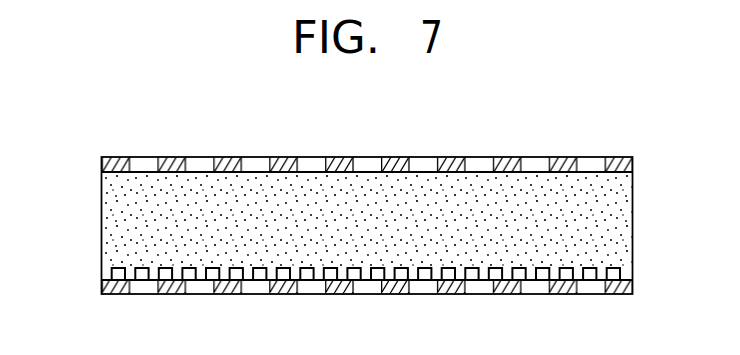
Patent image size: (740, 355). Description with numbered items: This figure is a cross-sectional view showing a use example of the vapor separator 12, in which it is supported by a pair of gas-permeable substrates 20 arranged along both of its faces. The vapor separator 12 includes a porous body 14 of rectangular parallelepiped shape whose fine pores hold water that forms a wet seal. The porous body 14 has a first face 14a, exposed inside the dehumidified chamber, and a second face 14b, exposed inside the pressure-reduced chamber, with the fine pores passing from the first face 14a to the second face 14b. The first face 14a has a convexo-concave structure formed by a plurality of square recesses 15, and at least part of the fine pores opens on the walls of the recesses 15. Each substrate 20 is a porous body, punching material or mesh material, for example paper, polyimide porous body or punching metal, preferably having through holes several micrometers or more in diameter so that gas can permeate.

The vapor separator 12 is at (513, 129).
The porous body 14 is at (633, 212).
The first face 14a is at (102, 272).
The second face 14b is at (125, 172).
The recess 15 is at (474, 276).
The substrate 20 is at (395, 157).